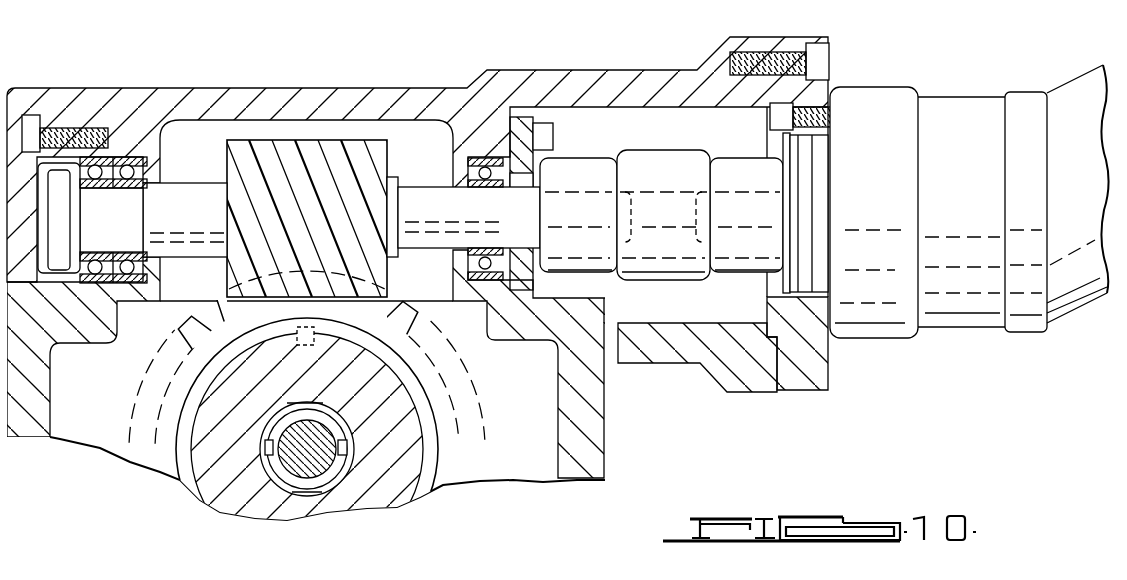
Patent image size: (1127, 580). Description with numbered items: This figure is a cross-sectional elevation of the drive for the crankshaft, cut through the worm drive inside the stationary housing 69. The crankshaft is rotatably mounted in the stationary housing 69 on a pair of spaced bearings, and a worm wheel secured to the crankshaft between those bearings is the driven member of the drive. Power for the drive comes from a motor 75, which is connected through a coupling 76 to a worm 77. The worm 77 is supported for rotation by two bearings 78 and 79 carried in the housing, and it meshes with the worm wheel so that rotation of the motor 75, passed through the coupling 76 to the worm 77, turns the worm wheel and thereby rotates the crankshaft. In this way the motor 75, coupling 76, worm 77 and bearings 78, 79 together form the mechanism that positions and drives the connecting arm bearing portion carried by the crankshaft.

The stationary housing 69 is at (342, 89).
The motor 75 is at (952, 107).
The coupling 76 is at (657, 160).
The worm 77 is at (250, 150).
The bearing 78 is at (143, 159).
The bearing 79 is at (483, 171).